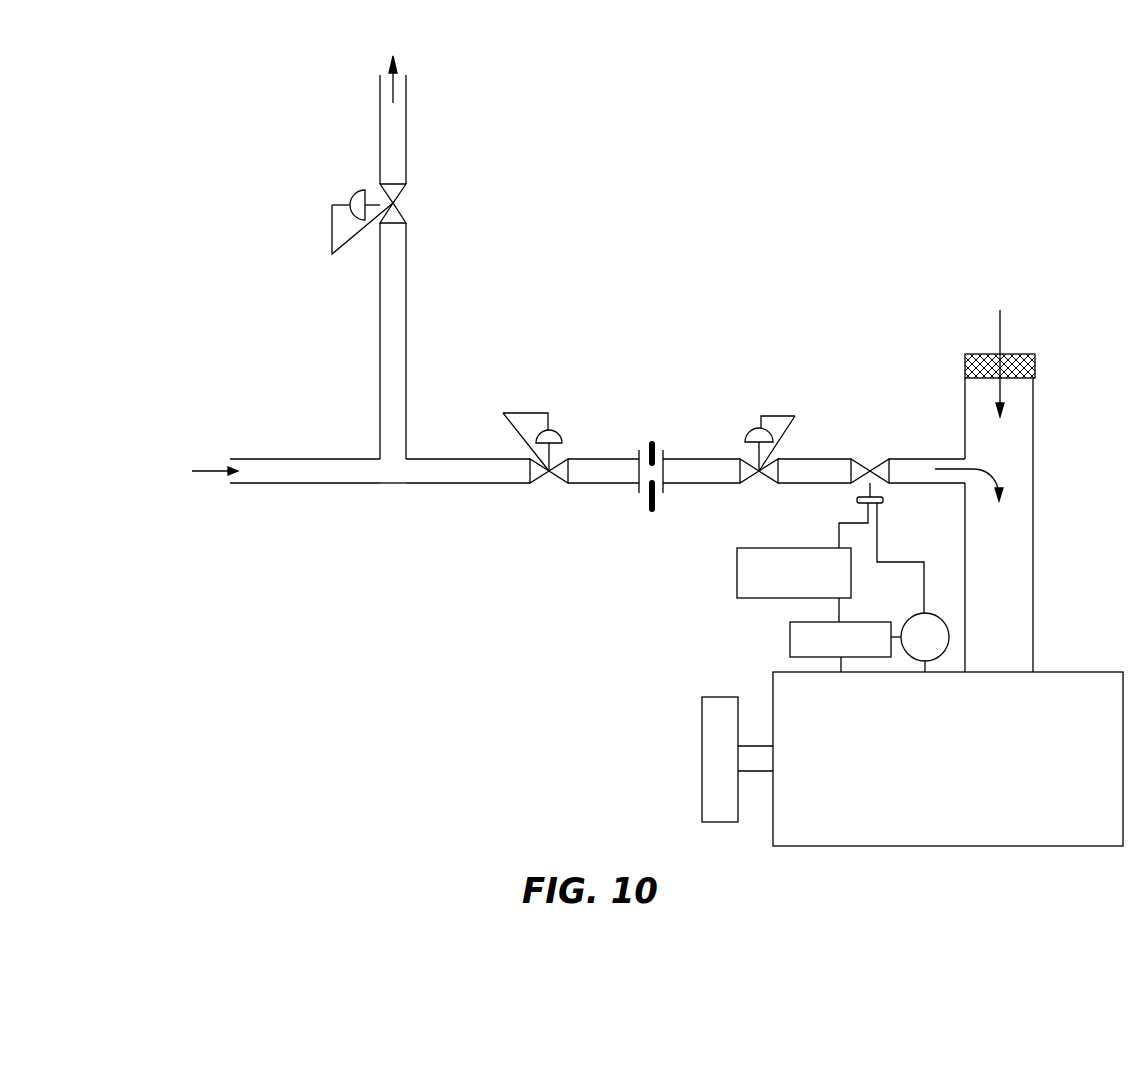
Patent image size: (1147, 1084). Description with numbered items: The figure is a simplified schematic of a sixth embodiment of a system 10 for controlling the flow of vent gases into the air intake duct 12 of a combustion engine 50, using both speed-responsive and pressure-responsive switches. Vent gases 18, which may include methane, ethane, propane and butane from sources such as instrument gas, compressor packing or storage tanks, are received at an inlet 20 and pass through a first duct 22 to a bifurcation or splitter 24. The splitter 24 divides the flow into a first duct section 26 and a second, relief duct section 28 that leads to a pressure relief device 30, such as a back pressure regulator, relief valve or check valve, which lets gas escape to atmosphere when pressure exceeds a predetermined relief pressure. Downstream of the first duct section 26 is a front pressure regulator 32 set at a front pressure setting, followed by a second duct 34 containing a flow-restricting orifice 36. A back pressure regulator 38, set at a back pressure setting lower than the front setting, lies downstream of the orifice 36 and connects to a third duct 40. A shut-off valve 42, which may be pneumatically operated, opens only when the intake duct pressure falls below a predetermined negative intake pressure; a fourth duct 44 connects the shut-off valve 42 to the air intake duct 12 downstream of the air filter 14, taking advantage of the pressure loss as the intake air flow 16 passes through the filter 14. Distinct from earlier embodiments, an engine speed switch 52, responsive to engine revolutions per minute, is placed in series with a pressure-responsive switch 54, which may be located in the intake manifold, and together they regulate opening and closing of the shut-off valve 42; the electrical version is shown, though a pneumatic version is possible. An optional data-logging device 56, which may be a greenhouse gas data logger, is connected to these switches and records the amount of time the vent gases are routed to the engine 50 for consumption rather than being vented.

The system 10 is at (745, 163).
The air intake duct 12 is at (1035, 468).
The air filter 14 is at (1035, 368).
The intake air flow 16 is at (1002, 333).
The vent gases 18 is at (197, 565).
The inlet 20 is at (250, 485).
The first duct 22 is at (330, 485).
The splitter 24 is at (389, 469).
The first duct section 26 is at (478, 485).
The relief duct section 28 is at (380, 408).
The pressure relief device 30 is at (413, 217).
The front pressure regulator 32 is at (556, 478).
The second duct 34 is at (623, 459).
The flow-restricting orifice 36 is at (648, 493).
The back pressure regulator 38 is at (767, 478).
The third duct 40 is at (825, 459).
The shut-off valve 42 is at (875, 465).
The fourth duct 44 is at (925, 457).
The combustion engine 50 is at (773, 681).
The engine speed switch 52 is at (790, 635).
The pressure-responsive switch 54 is at (937, 660).
The data-logging device 56 is at (737, 575).